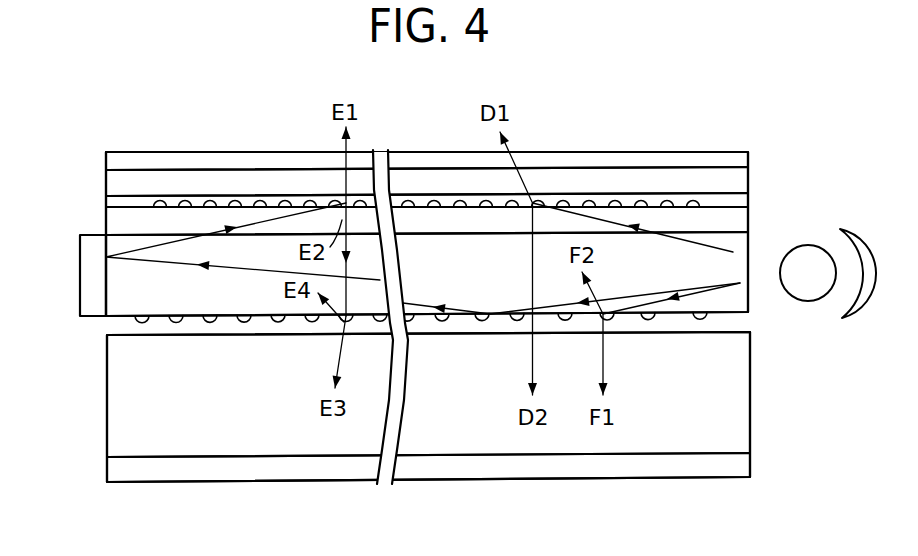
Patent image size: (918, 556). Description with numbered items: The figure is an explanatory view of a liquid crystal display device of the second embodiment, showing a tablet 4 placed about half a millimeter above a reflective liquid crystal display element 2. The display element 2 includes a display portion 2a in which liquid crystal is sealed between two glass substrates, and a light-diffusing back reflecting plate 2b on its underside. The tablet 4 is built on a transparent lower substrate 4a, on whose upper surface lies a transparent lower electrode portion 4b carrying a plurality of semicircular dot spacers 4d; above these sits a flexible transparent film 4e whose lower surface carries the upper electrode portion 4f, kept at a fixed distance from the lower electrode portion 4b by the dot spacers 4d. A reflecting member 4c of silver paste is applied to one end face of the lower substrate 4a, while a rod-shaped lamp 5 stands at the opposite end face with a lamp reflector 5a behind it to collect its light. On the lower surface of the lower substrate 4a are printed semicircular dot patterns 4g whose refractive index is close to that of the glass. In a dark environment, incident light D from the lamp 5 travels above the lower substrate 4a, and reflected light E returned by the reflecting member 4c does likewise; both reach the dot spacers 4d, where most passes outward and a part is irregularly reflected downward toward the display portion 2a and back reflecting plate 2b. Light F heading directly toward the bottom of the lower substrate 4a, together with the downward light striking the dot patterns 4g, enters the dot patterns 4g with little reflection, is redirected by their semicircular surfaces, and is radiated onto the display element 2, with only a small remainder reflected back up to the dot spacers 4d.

The reflective liquid crystal display element 2 is at (704, 484).
The display portion 2a is at (135, 417).
The back reflecting plate 2b is at (168, 467).
The tablet 4 is at (722, 144).
The lower substrate 4a is at (117, 300).
The lower electrode portion 4b is at (120, 220).
The reflecting member 4c is at (93, 275).
The dot spacers 4d is at (187, 201).
The film 4e is at (137, 158).
The upper electrode portion 4f is at (120, 180).
The dot patterns 4g is at (177, 324).
The lamp 5 is at (812, 262).
The lamp reflector 5a is at (860, 303).
The incident light D is at (708, 244).
The reflected light E is at (715, 283).
The light traveling toward bottom of lower substrate F is at (710, 290).